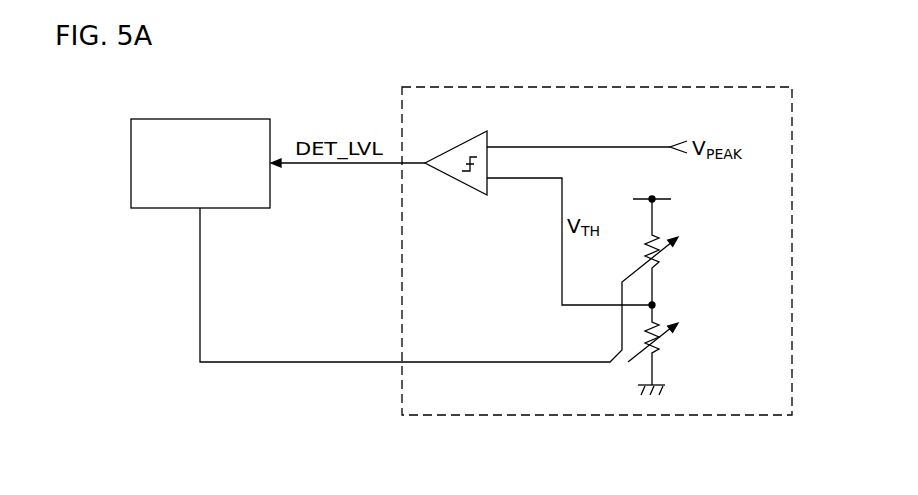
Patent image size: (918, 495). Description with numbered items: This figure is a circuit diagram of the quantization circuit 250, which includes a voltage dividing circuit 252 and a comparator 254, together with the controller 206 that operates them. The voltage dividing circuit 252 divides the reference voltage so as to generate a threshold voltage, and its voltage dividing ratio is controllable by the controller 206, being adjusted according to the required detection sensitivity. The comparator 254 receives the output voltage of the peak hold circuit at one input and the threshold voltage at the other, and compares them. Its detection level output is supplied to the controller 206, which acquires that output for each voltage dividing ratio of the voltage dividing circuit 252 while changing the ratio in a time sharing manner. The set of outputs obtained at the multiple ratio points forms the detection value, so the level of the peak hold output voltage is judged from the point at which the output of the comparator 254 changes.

The controller 206 is at (210, 118).
The quantization circuit 250 is at (603, 86).
The voltage dividing circuit 252 is at (688, 215).
The comparator 254 is at (443, 178).